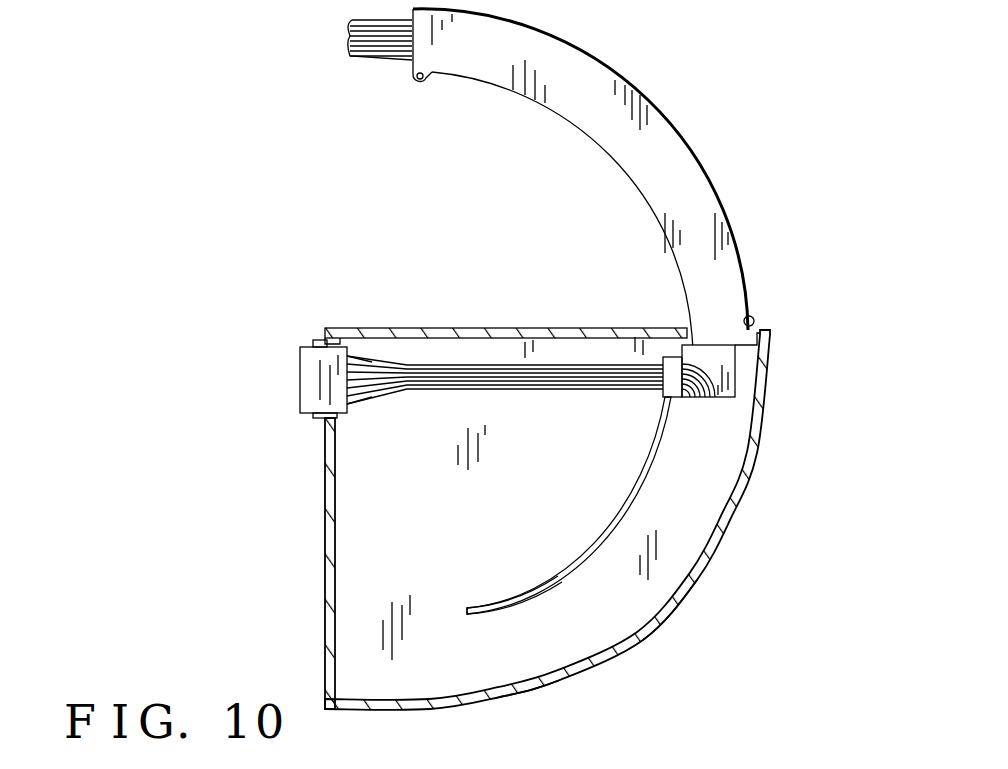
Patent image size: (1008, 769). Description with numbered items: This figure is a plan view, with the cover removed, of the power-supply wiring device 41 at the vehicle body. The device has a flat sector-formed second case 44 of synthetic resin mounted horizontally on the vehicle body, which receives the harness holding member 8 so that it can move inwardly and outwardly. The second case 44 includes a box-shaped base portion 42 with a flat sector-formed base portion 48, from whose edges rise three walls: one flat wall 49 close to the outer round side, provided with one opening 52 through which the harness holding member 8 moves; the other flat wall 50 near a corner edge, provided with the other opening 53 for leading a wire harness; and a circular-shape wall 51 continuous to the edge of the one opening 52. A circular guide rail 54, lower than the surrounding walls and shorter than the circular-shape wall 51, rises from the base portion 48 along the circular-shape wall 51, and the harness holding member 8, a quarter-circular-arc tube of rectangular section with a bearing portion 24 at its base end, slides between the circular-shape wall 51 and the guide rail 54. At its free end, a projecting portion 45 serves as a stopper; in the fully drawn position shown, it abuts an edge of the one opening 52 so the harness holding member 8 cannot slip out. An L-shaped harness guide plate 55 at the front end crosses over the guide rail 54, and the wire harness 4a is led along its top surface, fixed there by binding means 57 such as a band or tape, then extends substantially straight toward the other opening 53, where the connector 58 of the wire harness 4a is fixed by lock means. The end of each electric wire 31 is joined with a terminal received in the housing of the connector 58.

The harness holding member 8 is at (684, 131).
The wire harness 4a is at (387, 62).
The bearing portion 24 is at (430, 82).
The flat wall 49 is at (515, 330).
The one opening 52 is at (754, 318).
The power-supply wiring device 41 is at (884, 362).
The other opening 53 is at (322, 345).
The connector 58 is at (300, 378).
The projecting portion 45 is at (763, 368).
The electric wire 31 is at (375, 400).
The harness guide plate 55 is at (742, 392).
The binding means 57 is at (664, 440).
The guide rail 54 is at (545, 580).
The other flat wall 50 is at (325, 533).
The base portion 42 is at (700, 568).
The second case 44 is at (700, 611).
The circular-shape wall 51 is at (612, 658).
The base portion 48 is at (510, 660).